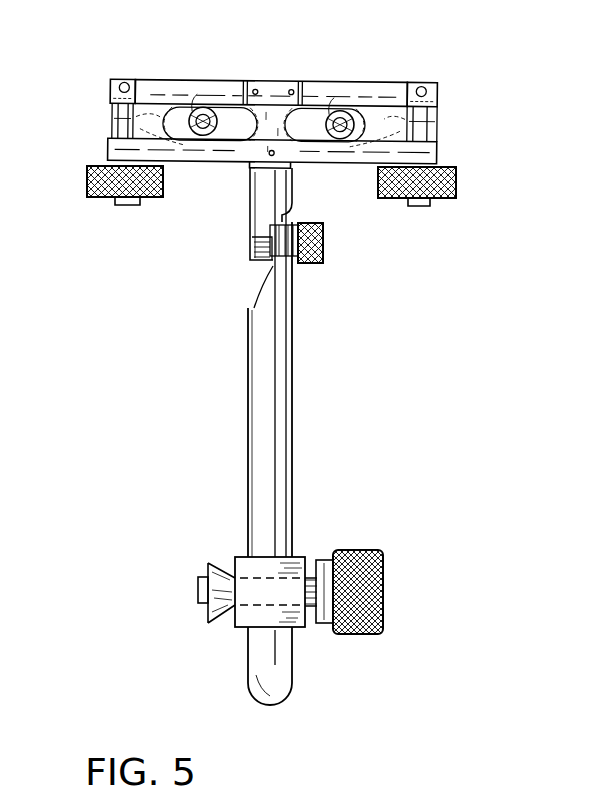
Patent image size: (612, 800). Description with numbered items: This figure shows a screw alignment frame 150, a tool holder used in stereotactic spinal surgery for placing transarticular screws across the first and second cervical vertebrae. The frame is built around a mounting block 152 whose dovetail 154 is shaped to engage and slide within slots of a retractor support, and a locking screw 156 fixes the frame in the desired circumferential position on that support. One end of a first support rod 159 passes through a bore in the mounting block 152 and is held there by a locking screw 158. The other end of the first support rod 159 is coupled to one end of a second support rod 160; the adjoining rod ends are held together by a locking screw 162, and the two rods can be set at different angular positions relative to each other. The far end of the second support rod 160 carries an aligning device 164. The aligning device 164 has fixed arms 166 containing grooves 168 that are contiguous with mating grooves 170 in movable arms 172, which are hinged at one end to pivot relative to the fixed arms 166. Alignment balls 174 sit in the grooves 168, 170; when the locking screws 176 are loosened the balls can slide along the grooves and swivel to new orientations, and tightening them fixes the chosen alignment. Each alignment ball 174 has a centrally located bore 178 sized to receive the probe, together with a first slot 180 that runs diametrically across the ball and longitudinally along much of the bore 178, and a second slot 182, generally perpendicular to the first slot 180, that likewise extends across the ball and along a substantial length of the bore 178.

The screw alignment frame 150 is at (416, 392).
The mounting block 152 is at (300, 558).
The dovetail 154 is at (219, 624).
The locking screw 156 is at (376, 551).
The locking screw 158 is at (327, 627).
The first support rod 159 is at (247, 452).
The second support rod 160 is at (249, 208).
The locking screw 162 is at (325, 247).
The aligning device 164 is at (272, 81).
The fixed arms 166 is at (193, 163).
The grooves 168 is at (133, 118).
The mating grooves 170 is at (156, 94).
The movable arms 172 is at (226, 96).
The alignment balls 174 is at (176, 100).
The locking screws 176 is at (88, 190).
The bores 178 is at (271, 126).
The first slot 180 is at (213, 144).
The second slot 182 is at (320, 162).